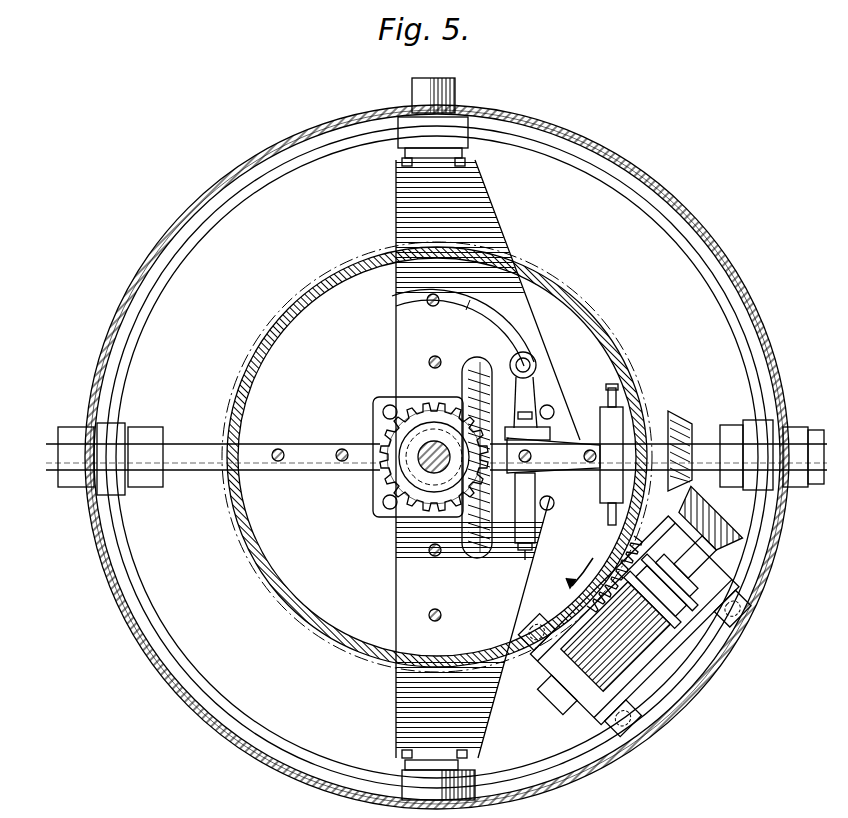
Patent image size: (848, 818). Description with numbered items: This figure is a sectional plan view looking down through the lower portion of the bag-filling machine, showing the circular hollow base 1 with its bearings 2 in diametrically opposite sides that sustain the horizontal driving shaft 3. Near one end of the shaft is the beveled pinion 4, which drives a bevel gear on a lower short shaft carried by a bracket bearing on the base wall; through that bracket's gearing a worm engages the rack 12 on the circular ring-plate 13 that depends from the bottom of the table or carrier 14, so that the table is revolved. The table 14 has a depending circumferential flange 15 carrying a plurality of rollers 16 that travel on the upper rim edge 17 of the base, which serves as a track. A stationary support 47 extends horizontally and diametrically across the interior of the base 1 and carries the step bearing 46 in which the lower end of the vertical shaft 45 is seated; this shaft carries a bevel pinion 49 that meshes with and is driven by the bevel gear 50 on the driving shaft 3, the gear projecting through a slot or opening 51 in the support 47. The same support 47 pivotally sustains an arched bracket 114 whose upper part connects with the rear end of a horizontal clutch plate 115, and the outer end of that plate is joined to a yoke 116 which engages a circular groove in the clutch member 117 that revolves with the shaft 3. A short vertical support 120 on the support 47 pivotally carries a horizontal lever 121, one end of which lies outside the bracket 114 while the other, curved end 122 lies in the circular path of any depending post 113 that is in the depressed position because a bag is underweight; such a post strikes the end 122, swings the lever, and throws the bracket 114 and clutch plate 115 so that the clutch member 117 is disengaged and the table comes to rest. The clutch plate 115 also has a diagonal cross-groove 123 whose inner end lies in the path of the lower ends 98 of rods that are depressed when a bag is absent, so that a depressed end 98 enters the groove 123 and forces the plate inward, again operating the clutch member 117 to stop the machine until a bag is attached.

The circular hollow base 1 is at (727, 346).
The bearings 2 is at (146, 427).
The horizontal driving shaft 3 is at (297, 452).
The beveled pinion 4 is at (676, 417).
The rack 12 is at (620, 563).
The circular ring-plate 13 is at (564, 614).
The table or carrier 14 is at (118, 302).
The depending circumferential flange 15 is at (250, 760).
The rollers 16 is at (407, 133).
The upper rim edge 17 is at (200, 679).
The shaft 45 is at (422, 466).
The step bearing 46 is at (407, 405).
The stationary support 47 is at (400, 319).
The bevel pinion 49 is at (393, 441).
The bevel gear 50 is at (485, 550).
The slot or opening 51 is at (472, 366).
The lower ends of the rods 98 is at (432, 358).
The depending post 113 is at (427, 300).
The arched or curved bracket 114 is at (522, 532).
The horizontal clutch plate 115 is at (558, 474).
The yoke 116 is at (627, 412).
The clutch member 117 is at (562, 470).
The short vertical support 120 is at (537, 363).
The horizontal lever 121 is at (512, 331).
The lever end 122 is at (462, 306).
The diagonal cross-groove 123 is at (530, 476).